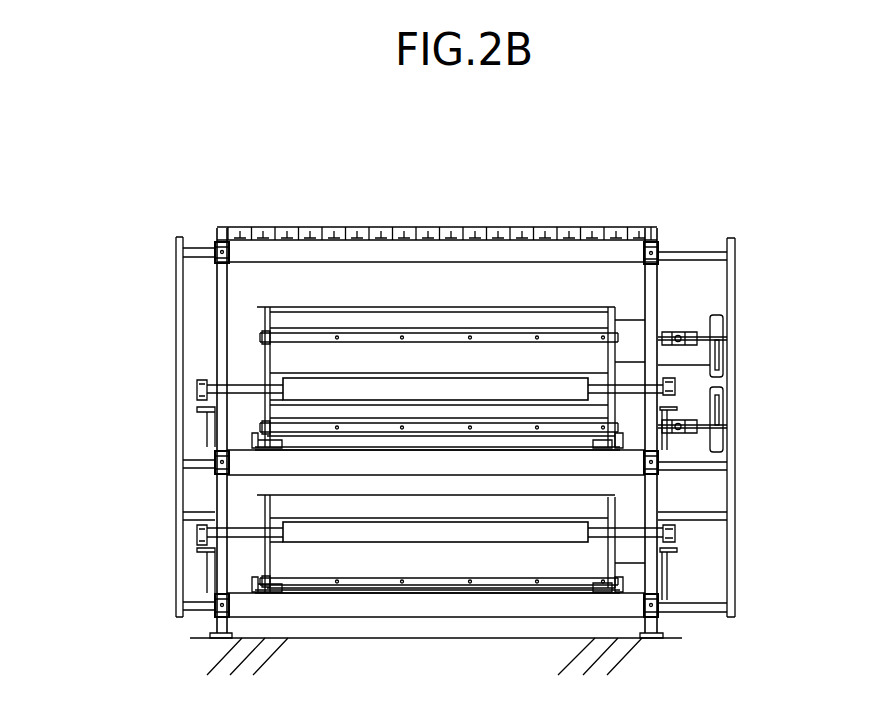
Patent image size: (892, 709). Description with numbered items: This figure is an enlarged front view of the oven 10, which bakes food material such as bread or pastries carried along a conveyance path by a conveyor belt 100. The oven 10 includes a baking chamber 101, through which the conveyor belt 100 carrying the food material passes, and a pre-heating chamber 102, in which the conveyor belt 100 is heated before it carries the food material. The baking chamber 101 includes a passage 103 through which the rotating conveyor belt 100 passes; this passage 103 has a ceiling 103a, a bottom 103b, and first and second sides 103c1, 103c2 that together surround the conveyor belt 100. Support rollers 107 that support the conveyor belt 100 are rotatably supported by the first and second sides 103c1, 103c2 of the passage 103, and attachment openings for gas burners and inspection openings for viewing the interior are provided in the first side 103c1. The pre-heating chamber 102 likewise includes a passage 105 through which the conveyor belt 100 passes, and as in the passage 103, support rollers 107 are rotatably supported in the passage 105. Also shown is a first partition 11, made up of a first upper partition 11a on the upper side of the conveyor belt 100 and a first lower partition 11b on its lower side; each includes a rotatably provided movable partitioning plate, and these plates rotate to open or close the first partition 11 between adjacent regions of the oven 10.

The oven 10 is at (770, 169).
The first partition 11 is at (383, 183).
The first upper partition 11a is at (303, 327).
The first lower partition 11b is at (352, 410).
The conveyor belt 100 is at (332, 378).
The baking chamber 101 is at (640, 227).
The pre-heating chamber 102 is at (507, 617).
The passage 103 is at (532, 307).
The ceiling 103a is at (498, 310).
The bottom 103b is at (437, 438).
The first side 103c1 is at (608, 372).
The second side 103c2 is at (264, 353).
The passage 105 is at (437, 594).
The support rollers 107 is at (302, 400).